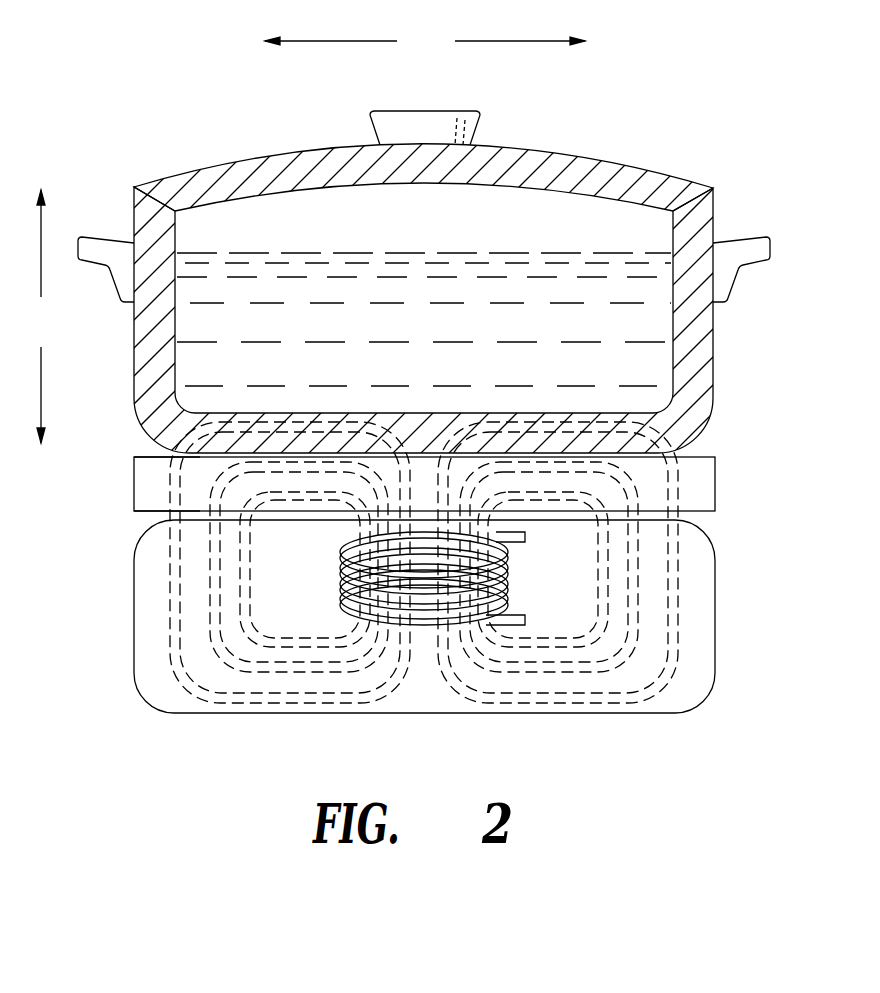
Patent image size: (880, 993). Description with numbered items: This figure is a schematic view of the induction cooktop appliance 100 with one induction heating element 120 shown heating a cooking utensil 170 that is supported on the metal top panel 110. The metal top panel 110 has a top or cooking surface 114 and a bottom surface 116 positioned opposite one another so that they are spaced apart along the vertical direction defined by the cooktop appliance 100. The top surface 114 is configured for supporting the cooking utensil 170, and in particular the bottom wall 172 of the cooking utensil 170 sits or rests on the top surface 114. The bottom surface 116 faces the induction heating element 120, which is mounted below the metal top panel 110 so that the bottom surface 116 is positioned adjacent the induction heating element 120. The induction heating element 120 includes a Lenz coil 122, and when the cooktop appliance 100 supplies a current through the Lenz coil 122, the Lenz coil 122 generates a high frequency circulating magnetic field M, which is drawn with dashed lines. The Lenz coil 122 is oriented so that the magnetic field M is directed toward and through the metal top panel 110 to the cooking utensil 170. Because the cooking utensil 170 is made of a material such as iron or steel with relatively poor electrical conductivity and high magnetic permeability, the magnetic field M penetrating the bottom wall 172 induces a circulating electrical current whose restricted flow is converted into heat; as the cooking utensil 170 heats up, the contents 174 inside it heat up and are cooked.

The induction cooktop appliance 100 is at (647, 78).
The metal top panel 110 is at (716, 480).
The top surface 114 is at (149, 456).
The bottom surface 116 is at (148, 511).
The induction heating element 120 is at (575, 716).
The Lenz coil 122 is at (510, 585).
The cooking utensil 170 is at (713, 356).
The bottom wall 172 is at (427, 428).
The contents 174 is at (458, 239).
The magnetic field M is at (170, 605).